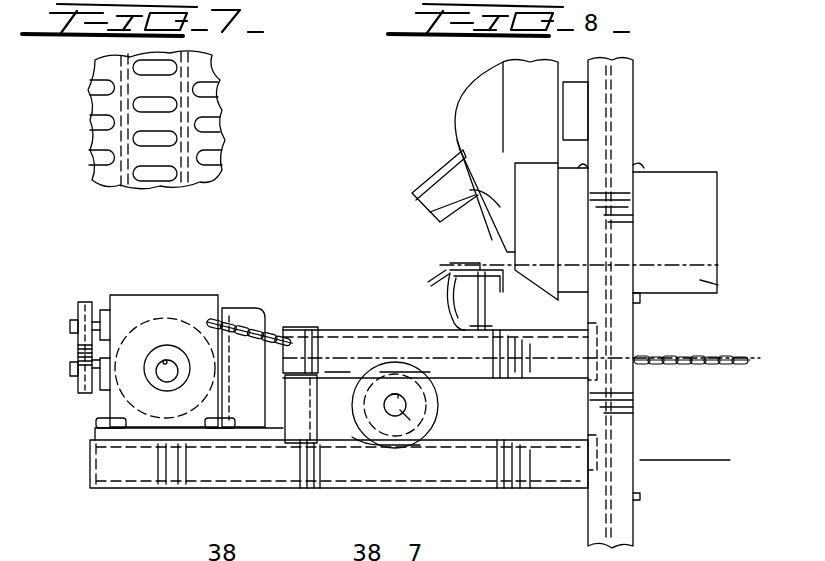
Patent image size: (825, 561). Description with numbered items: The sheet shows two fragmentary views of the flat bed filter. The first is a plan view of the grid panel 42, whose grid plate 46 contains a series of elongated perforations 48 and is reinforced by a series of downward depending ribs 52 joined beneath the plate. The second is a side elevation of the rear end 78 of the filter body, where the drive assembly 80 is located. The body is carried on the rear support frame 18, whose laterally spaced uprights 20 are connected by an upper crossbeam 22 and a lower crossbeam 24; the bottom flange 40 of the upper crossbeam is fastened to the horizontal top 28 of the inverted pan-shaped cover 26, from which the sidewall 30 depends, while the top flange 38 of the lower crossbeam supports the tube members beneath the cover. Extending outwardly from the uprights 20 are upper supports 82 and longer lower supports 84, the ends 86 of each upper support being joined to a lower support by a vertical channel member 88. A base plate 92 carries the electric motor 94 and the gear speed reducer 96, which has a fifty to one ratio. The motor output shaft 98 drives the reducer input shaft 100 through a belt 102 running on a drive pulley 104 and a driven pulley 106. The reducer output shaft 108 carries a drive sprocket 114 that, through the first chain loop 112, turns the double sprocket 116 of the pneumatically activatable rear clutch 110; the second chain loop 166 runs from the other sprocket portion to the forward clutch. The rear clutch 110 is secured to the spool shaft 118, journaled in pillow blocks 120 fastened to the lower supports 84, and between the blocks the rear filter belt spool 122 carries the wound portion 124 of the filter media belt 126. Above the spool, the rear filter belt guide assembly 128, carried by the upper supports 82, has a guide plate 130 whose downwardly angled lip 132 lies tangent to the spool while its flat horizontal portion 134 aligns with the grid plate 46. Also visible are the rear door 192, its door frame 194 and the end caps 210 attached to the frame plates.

In FIG. 8, the rear support frame 18 is at (630, 90).
In FIG. 8, the uprights 20 is at (620, 532).
In FIG. 8, the upper crossbeam 22 is at (638, 162).
In FIG. 8, the lower crossbeam 24 is at (642, 500).
In FIG. 8, the cover 26 is at (694, 184).
In FIG. 8, the top 28 is at (672, 170).
In FIG. 8, the sidewall 30 is at (705, 216).
In FIG. 8, the top flange 38 is at (640, 305).
In FIG. 8, the bottom flange 40 is at (540, 158).
In FIG. 7, the grid panel 42 is at (183, 206).
In FIG. 8, the grid panel 42 is at (718, 290).
In FIG. 7, the grid plate 46 is at (218, 106).
In FIG. 7, the elongated perforations 48 is at (208, 155).
In FIG. 7, the ribs 52 is at (185, 72).
In FIG. 8, the rear end 78 is at (430, 170).
In FIG. 8, the drive assembly 80 is at (277, 291).
In FIG. 8, the upper supports 82 is at (492, 340).
In FIG. 8, the lower supports 84 is at (106, 467).
In FIG. 8, the ends 86 is at (300, 327).
In FIG. 8, the vertical channel member 88 is at (300, 405).
In FIG. 8, the base plate 92 is at (100, 432).
In FIG. 8, the electric motor 94 is at (248, 312).
In FIG. 8, the gear speed reducer 96 is at (148, 300).
In FIG. 8, the output shaft 98 is at (72, 324).
In FIG. 8, the input shaft 100 is at (70, 368).
In FIG. 8, the belt 102 is at (80, 347).
In FIG. 8, the drive pulley 104 is at (80, 304).
In FIG. 8, the driven pulley 106 is at (80, 390).
In FIG. 8, the output shaft 108 is at (162, 378).
In FIG. 8, the rear clutch 110 is at (438, 402).
In FIG. 8, the first chain loop 112 is at (212, 322).
In FIG. 8, the drive sprocket 114 is at (180, 400).
In FIG. 8, the double sprocket 116 is at (370, 442).
In FIG. 8, the spool shaft 118 is at (396, 412).
In FIG. 8, the pillow blocks 120 is at (452, 445).
In FIG. 8, the rear filter belt spool 122 is at (396, 440).
In FIG. 8, the wound portion 124 is at (360, 336).
In FIG. 8, the filter media belt 126 is at (718, 262).
In FIG. 8, the rear filter belt guide assembly 128 is at (482, 310).
In FIG. 8, the guide plate 130 is at (450, 268).
In FIG. 8, the lip 132 is at (452, 284).
In FIG. 8, the horizontal portion 134 is at (484, 262).
In FIG. 8, the second chain loop 166 is at (702, 364).
In FIG. 8, the rear door 192 is at (436, 215).
In FIG. 8, the door frame 194 is at (520, 158).
In FIG. 8, the end caps 210 is at (526, 192).